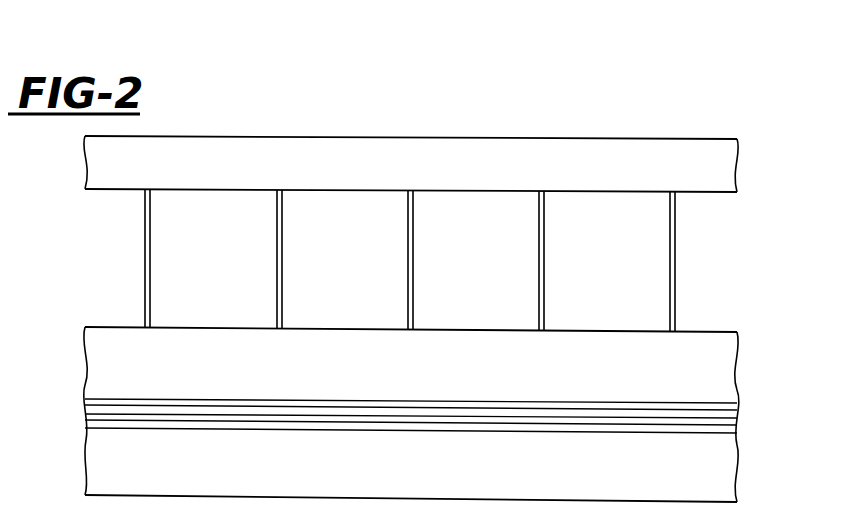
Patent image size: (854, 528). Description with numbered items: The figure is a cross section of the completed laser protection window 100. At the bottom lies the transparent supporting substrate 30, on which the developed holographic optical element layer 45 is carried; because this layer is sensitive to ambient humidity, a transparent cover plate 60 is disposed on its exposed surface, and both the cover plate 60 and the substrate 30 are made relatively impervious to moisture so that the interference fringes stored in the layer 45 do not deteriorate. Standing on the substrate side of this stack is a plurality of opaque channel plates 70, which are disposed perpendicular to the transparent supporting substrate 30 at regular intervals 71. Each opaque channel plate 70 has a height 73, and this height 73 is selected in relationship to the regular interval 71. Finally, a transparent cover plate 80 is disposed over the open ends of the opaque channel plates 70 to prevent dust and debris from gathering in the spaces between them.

The laser protection window 100 is at (313, 118).
The transparent cover plate 80 is at (737, 163).
The opaque channel plate 70 is at (277, 212).
The regular interval 71 is at (263, 259).
The height 73 is at (80, 327).
The transparent supporting substrate 30 is at (737, 374).
The holographic optical element layer 45 is at (737, 426).
The transparent cover plate 60 is at (737, 484).